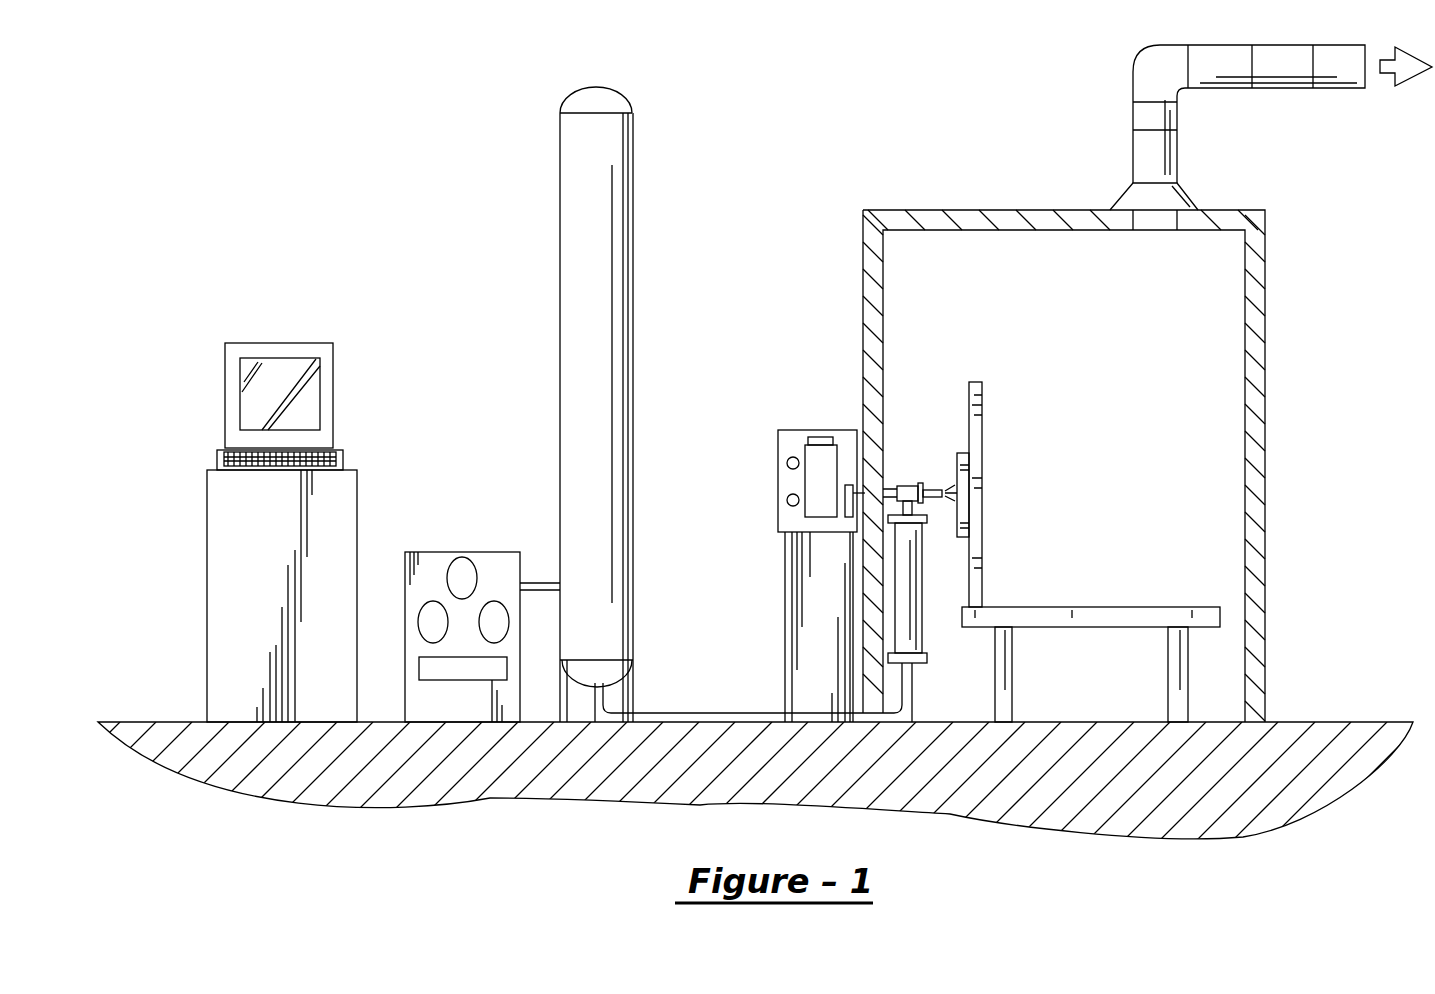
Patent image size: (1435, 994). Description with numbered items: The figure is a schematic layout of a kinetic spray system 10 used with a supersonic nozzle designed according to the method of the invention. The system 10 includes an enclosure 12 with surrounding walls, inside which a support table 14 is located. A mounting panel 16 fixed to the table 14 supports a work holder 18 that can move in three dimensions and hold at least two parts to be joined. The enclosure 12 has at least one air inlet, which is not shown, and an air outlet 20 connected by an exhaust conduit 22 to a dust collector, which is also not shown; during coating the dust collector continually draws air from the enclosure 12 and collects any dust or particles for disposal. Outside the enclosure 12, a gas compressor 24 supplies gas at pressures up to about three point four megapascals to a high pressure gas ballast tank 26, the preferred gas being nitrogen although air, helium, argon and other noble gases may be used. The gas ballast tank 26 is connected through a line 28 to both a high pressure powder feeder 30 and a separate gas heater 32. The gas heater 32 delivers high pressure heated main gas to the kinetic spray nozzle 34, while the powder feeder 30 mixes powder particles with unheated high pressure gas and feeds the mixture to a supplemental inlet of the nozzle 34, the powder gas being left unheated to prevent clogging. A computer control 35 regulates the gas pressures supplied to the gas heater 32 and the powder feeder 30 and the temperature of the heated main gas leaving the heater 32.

The kinetic spray system 10 is at (390, 232).
The enclosure 12 is at (1266, 348).
The support table 14 is at (1140, 612).
The mounting panel 16 is at (985, 438).
The work holder 18 is at (956, 457).
The air outlet 20 is at (1154, 224).
The exhaust conduit 22 is at (1282, 72).
The gas compressor 24 is at (435, 565).
The high pressure gas ballast tank 26 is at (600, 232).
The line 28 is at (683, 710).
The high pressure powder feeder 30 is at (778, 483).
The gas heater 32 is at (908, 625).
The kinetic spray nozzle 34 is at (930, 487).
The computer control 35 is at (228, 507).